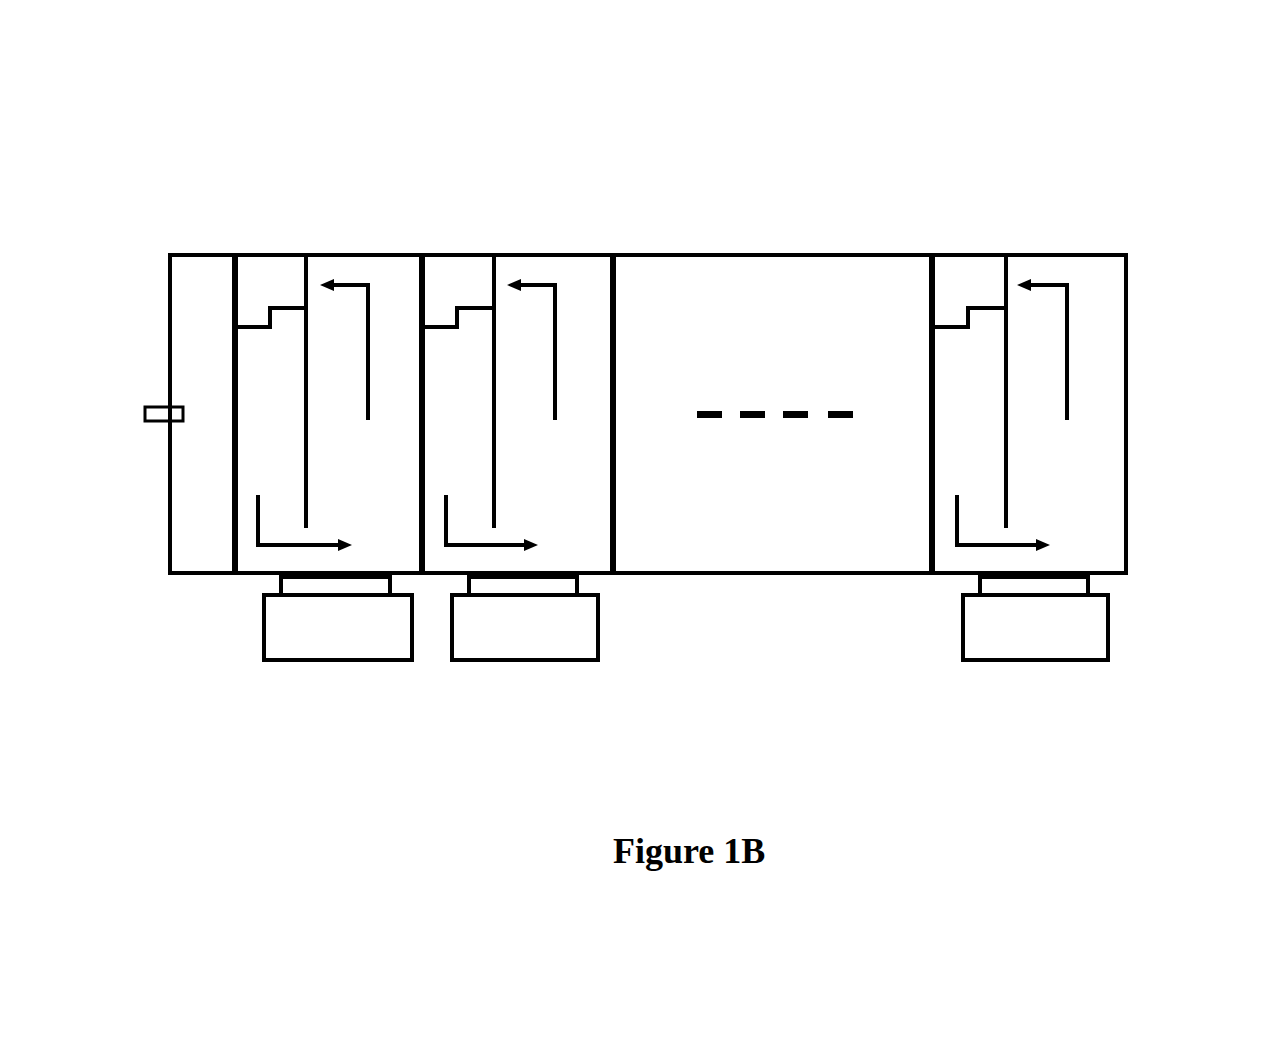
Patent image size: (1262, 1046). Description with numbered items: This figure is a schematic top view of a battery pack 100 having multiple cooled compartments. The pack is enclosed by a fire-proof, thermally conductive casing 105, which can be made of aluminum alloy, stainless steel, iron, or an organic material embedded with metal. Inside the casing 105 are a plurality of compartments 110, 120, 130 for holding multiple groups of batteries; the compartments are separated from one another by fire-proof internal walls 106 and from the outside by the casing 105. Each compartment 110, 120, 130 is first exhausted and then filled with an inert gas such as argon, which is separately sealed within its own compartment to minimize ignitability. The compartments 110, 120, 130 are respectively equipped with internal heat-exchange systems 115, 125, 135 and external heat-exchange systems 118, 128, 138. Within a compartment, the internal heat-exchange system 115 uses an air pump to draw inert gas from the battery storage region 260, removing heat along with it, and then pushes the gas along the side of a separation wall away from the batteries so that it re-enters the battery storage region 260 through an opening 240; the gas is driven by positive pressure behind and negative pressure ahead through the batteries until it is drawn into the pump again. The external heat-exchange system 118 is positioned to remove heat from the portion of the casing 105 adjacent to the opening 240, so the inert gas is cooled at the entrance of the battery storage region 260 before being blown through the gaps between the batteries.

The battery pack 100 is at (929, 133).
The casing 105 is at (747, 254).
The internal wall 106 is at (421, 484).
The compartment 110 is at (357, 282).
The internal heat-exchange system 115 is at (268, 280).
The external heat-exchange system 118 is at (355, 668).
The compartment 120 is at (558, 282).
The internal heat-exchange system 125 is at (457, 280).
The external heat-exchange system 128 is at (543, 668).
The compartment 130 is at (1073, 282).
The internal heat-exchange system 135 is at (959, 280).
The external heat-exchange system 138 is at (1058, 668).
The opening 240 is at (1020, 559).
The battery storage region 260 is at (1089, 503).